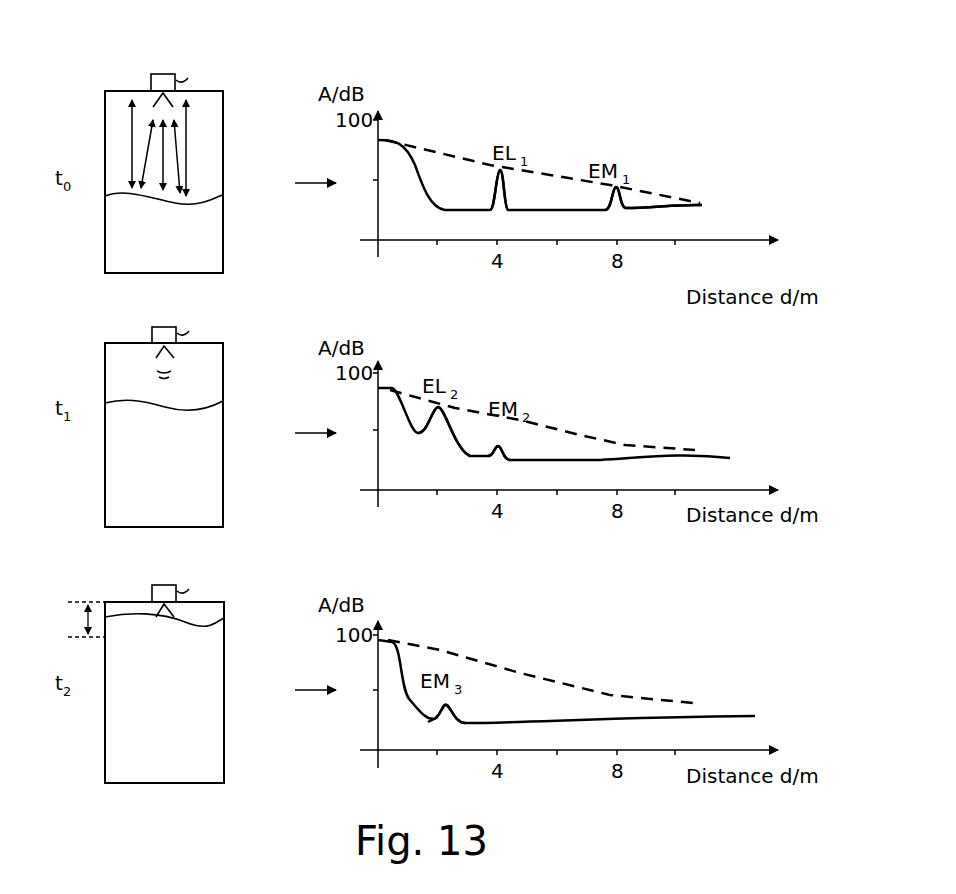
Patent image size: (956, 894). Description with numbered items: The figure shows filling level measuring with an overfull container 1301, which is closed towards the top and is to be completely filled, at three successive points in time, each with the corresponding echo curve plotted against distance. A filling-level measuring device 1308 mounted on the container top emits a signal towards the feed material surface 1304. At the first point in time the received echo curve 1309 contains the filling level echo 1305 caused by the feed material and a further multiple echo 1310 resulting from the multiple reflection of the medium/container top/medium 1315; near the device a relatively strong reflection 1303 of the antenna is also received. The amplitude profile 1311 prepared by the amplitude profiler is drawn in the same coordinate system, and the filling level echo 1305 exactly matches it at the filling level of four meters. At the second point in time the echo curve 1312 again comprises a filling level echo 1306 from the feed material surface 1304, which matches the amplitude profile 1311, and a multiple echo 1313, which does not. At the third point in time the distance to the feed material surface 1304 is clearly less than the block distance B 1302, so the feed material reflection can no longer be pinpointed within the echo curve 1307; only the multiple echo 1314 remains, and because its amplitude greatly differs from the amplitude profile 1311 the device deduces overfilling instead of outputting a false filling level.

The container 1301 is at (223, 233).
The block distance B 1302 is at (58, 615).
The reflection of the antenna 1303 is at (410, 147).
The feed material surface 1304 is at (112, 197).
The filling level echo EL1 1305 is at (512, 170).
The echo EL2 1306 is at (453, 406).
The echo curve 1307 is at (623, 725).
The filling-level measuring device 1308 is at (163, 73).
The echo curve 1309 is at (660, 210).
The multiple echo EM1 1310 is at (624, 186).
The amplitude profile 1311 is at (540, 178).
The echo curve 1312 is at (623, 460).
The multiple echo EM2 1313 is at (505, 445).
The multiple echo EM3 1314 is at (448, 708).
The multiple reflection of the medium/container top/medium 1315 is at (137, 165).